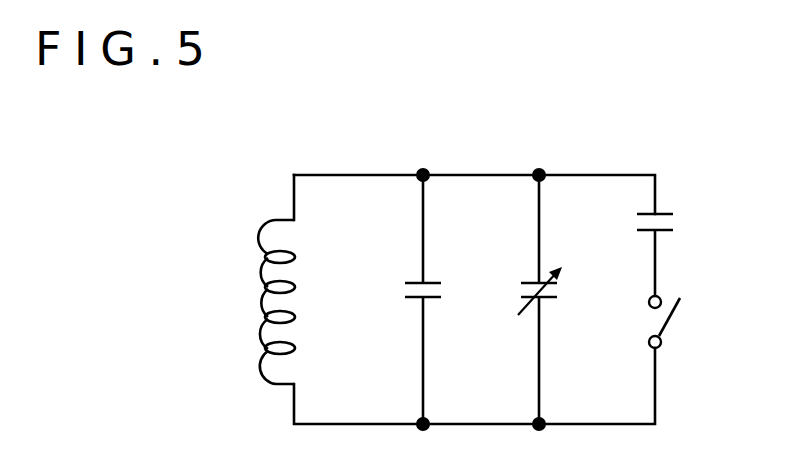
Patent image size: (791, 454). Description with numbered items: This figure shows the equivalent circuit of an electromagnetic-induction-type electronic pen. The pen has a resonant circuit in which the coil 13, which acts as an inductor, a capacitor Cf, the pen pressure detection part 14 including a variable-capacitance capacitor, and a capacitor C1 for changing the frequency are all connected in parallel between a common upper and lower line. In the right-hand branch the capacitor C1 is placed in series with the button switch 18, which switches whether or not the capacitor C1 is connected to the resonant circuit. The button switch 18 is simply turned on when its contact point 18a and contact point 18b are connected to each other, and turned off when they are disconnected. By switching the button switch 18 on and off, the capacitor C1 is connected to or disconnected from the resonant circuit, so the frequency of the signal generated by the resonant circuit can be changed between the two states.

The coil 13 is at (260, 307).
The capacitor Cf is at (405, 292).
The pen pressure detection part 14 is at (522, 292).
The capacitor for changing the frequency C1 is at (675, 222).
The button switch 18 is at (660, 316).
The contact point 18a is at (647, 302).
The contact point 18b is at (645, 342).